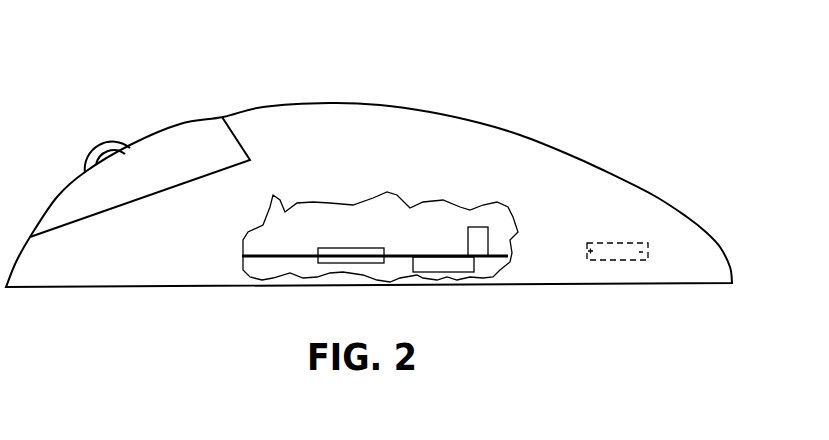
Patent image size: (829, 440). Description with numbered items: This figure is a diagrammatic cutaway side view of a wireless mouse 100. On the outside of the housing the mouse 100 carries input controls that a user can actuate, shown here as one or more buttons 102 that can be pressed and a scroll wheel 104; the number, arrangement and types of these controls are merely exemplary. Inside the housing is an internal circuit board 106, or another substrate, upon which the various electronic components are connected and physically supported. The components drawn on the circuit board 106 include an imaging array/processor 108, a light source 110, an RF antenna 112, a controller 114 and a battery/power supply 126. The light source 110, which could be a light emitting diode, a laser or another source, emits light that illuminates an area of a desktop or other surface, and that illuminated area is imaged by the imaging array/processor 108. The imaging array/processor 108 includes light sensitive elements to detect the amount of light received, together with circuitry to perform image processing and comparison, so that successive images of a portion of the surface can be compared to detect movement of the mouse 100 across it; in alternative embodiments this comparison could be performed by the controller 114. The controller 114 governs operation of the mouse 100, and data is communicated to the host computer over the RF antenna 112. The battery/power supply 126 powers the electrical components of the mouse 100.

The mouse 100 is at (563, 152).
The button 102 is at (180, 124).
The scroll wheel 104 is at (110, 142).
The internal circuit board 106 is at (283, 255).
The imaging array/processor 108 is at (342, 265).
The light source 110 is at (468, 273).
The RF antenna 112 is at (483, 227).
The controller 114 is at (366, 253).
The battery/power supply 126 is at (633, 242).